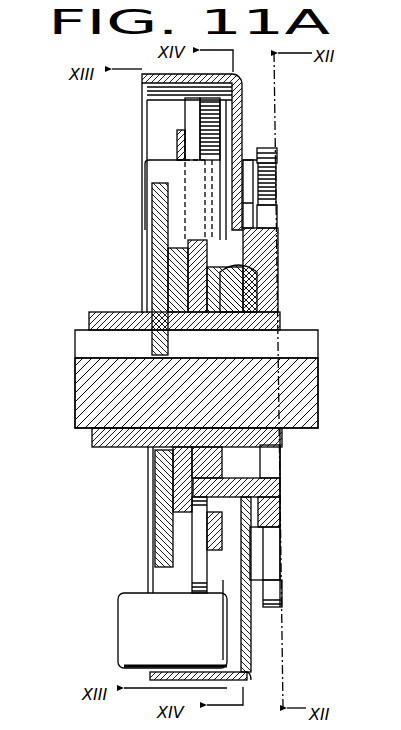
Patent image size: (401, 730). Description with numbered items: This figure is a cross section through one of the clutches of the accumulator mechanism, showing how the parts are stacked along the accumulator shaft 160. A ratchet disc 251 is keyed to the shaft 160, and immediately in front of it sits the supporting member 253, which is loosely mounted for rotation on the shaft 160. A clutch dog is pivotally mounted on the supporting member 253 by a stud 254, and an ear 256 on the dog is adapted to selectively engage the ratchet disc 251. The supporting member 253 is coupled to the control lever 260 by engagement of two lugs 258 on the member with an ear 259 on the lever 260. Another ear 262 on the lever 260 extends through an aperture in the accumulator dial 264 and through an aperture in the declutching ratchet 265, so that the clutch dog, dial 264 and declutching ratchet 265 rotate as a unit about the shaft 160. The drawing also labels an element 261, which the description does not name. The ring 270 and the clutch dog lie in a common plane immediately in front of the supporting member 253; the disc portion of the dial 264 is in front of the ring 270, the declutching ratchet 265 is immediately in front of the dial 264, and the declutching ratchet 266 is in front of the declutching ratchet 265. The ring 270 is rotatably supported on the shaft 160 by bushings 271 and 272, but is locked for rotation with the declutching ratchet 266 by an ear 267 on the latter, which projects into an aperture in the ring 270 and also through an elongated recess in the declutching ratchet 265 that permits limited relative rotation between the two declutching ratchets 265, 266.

The accumulator shaft 160 is at (110, 380).
The ratchet disc 251 is at (160, 487).
The supporting member 253 is at (185, 112).
The stud 254 is at (177, 132).
The ear 256 is at (152, 176).
The lugs 258 is at (195, 572).
The ear 259 is at (130, 633).
The control lever 260 is at (270, 462).
The upper housing 261 is at (283, 84).
The ear 262 is at (240, 276).
The accumulator dial 264 is at (245, 635).
The declutching ratchet 265 is at (252, 165).
The declutching ratchet 266 is at (270, 562).
The ear 267 is at (262, 490).
The ring 270 is at (205, 248).
The bushing 271 is at (207, 293).
The bushing 272 is at (217, 322).